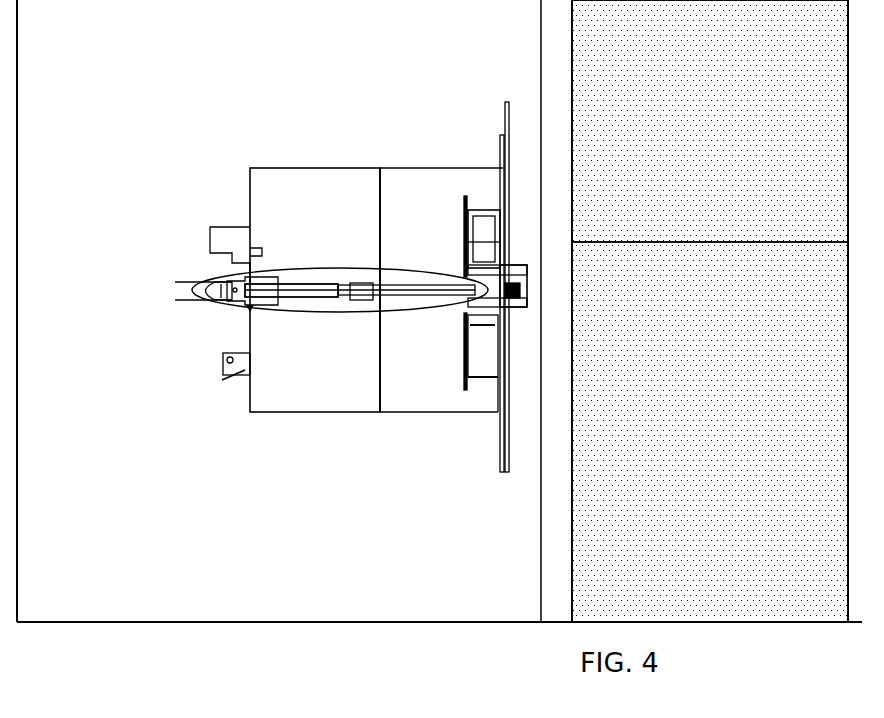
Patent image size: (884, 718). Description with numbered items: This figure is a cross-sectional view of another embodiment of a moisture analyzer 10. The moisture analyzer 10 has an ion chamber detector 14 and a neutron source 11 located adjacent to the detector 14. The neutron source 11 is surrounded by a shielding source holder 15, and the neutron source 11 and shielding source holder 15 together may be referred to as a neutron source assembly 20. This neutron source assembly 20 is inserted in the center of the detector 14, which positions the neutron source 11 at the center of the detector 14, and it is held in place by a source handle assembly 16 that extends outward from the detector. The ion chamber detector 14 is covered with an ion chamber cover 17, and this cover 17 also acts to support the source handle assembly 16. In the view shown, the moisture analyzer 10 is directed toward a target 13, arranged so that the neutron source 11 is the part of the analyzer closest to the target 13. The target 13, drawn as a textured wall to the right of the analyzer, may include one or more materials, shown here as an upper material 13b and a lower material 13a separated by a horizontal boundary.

The moisture analyzer 10 is at (236, 167).
The neutron source 11 is at (512, 292).
The target 13 is at (569, 478).
The material 13a is at (710, 432).
The material 13b is at (710, 121).
The ion chamber detector 14 is at (463, 226).
The shielding source holder 15 is at (496, 282).
The source handle assembly 16 is at (260, 310).
The ion chamber cover 17 is at (318, 212).
The neutron source assembly 20 is at (502, 317).